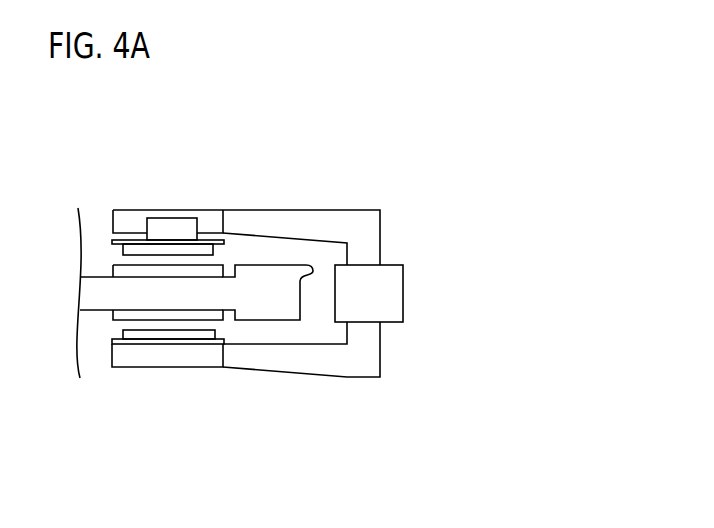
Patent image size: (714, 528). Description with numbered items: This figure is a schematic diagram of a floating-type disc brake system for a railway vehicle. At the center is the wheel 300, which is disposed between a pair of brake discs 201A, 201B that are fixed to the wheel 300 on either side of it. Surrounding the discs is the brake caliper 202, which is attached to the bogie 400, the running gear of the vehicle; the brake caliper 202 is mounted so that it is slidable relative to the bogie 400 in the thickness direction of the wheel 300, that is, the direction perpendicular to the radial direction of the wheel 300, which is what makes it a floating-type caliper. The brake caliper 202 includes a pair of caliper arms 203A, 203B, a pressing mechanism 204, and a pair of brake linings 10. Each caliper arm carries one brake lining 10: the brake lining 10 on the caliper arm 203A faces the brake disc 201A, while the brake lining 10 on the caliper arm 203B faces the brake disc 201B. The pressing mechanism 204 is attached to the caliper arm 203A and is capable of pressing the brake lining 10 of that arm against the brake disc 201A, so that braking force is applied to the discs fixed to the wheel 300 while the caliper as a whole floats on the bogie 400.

The brake lining 10 is at (203, 247).
The brake disc 201A is at (132, 270).
The brake disc 201B is at (131, 320).
The brake caliper 202 is at (363, 242).
The caliper arm 203A is at (300, 222).
The caliper arm 203B is at (300, 358).
The pressing mechanism 204 is at (170, 223).
The wheel 300 is at (270, 288).
The bogie 400 is at (380, 295).